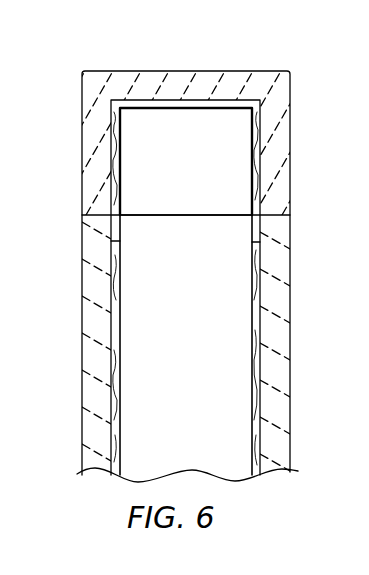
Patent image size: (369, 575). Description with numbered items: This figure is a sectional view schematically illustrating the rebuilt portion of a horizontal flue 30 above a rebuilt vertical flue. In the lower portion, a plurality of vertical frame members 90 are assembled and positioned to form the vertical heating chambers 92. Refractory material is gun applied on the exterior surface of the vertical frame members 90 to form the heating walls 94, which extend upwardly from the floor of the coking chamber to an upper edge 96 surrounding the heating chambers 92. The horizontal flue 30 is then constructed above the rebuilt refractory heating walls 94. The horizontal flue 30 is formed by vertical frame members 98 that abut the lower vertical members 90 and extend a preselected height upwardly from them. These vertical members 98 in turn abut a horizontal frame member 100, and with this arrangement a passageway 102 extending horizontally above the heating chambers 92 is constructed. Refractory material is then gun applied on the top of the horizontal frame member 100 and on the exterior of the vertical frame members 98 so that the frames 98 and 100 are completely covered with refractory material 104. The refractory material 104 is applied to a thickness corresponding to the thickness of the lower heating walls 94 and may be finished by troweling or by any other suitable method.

The horizontal flue 30 is at (298, 130).
The refractory material 104 is at (102, 79).
The passageway 102 is at (195, 120).
The horizontal frame member 100 is at (237, 100).
The vertical frame members 98 is at (120, 137).
The upper edge 96 is at (100, 213).
The heating walls 94 is at (92, 322).
The vertical heating chambers 92 is at (235, 322).
The vertical frame members 90 is at (118, 373).